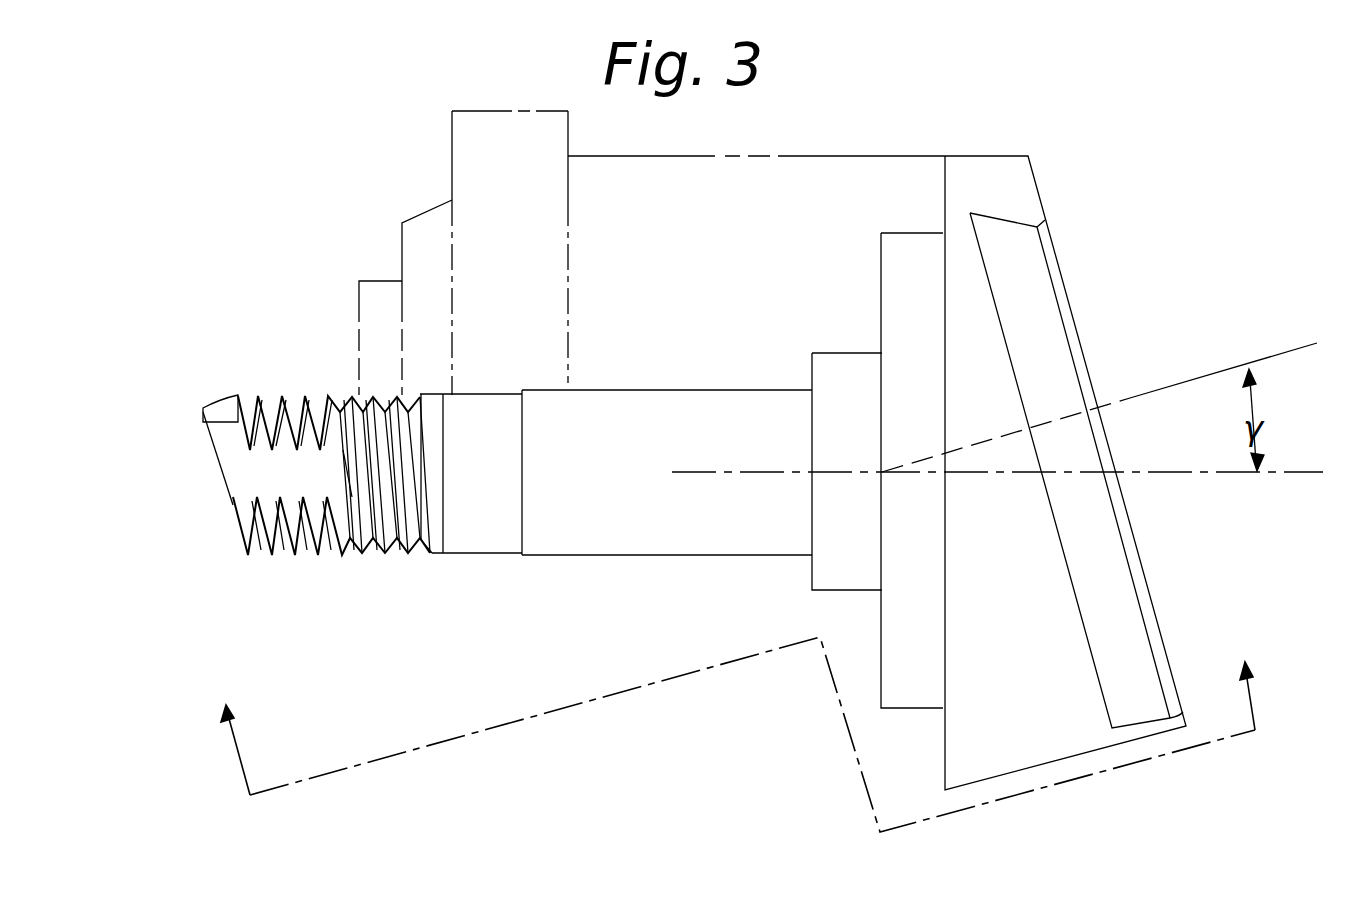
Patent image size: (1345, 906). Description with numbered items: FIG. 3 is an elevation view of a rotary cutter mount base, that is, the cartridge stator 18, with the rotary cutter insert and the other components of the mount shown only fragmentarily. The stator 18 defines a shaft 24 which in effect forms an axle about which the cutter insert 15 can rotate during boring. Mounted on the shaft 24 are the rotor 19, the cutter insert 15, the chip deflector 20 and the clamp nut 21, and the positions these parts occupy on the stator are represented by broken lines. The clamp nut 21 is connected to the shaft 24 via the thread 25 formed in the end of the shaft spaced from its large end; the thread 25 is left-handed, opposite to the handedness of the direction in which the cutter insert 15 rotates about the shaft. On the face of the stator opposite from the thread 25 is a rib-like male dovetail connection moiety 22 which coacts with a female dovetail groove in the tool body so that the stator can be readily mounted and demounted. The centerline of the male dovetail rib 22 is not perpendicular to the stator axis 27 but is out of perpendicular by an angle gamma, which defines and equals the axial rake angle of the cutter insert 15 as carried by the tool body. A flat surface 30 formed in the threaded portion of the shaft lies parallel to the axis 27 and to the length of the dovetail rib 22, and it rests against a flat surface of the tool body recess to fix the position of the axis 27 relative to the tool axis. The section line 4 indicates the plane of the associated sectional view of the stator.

The section line 4- 4 is at (730, 729).
The cutter insert 15 is at (510, 175).
The base 18 is at (547, 617).
The rotor 19 is at (708, 156).
The chip deflector 20 is at (428, 203).
The clamp nut 21 is at (372, 278).
The male dovetail connection moiety 22 is at (1047, 337).
The shaft 24 is at (740, 530).
The thread 25 is at (350, 557).
The stator axis 27 is at (1283, 473).
The flat surface 30 is at (245, 470).